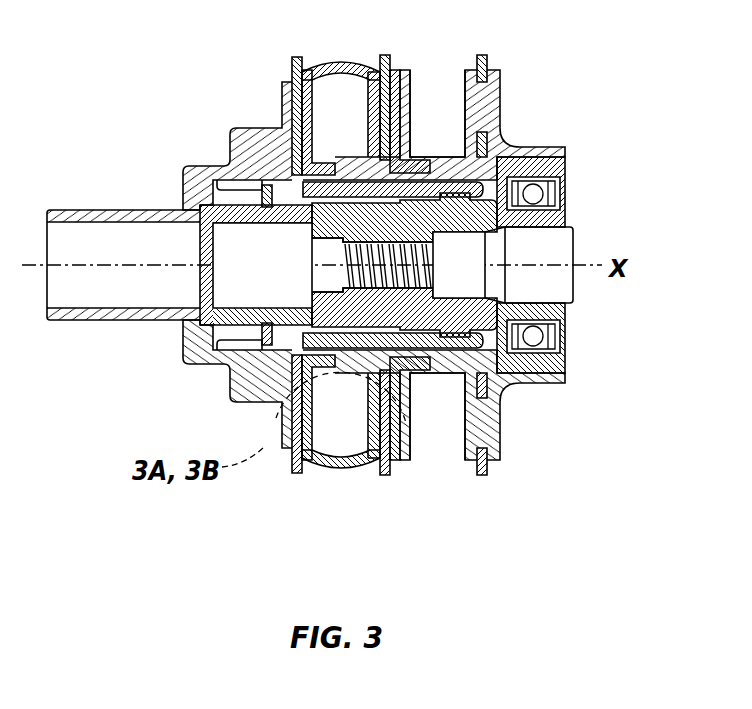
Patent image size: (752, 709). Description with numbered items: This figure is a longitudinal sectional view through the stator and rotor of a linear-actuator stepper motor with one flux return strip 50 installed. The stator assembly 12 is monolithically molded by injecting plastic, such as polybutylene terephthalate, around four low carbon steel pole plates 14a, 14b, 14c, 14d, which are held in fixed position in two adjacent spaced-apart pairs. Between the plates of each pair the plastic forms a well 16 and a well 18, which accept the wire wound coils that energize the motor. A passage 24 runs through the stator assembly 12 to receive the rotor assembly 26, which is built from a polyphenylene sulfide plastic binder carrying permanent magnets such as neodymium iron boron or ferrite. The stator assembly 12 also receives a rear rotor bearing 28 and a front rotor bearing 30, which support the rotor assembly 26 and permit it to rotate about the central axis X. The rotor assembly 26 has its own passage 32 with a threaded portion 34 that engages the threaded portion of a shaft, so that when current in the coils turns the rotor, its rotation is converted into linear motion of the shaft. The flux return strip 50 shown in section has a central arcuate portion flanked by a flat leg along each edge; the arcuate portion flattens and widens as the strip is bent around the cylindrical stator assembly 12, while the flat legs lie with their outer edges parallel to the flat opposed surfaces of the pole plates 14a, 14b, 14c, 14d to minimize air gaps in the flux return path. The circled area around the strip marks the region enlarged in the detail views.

The stator assembly 12 is at (248, 128).
The pole plate 14a is at (294, 480).
The pole plate 14b is at (387, 478).
The pole plate 14c is at (392, 478).
The pole plate 14d is at (482, 473).
The well 16 is at (357, 75).
The well 18 is at (430, 73).
The passage 24 is at (135, 222).
The rotor assembly 26 is at (247, 200).
The rear rotor bearing 28 is at (567, 368).
The front rotor bearing 30 is at (233, 388).
The passage 32 is at (576, 229).
The threaded portion 34 is at (565, 340).
The flux return strip 50 is at (358, 470).